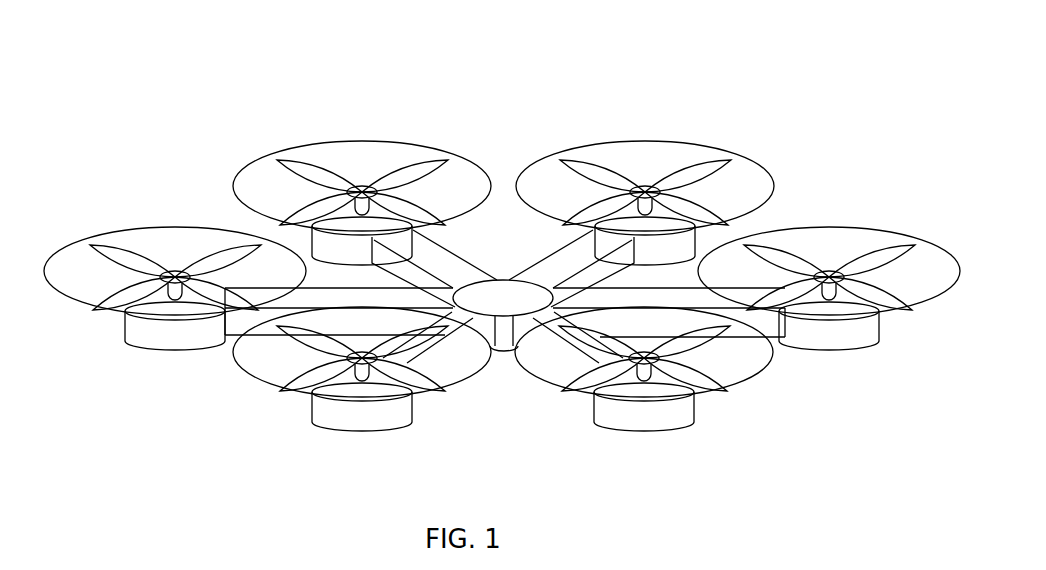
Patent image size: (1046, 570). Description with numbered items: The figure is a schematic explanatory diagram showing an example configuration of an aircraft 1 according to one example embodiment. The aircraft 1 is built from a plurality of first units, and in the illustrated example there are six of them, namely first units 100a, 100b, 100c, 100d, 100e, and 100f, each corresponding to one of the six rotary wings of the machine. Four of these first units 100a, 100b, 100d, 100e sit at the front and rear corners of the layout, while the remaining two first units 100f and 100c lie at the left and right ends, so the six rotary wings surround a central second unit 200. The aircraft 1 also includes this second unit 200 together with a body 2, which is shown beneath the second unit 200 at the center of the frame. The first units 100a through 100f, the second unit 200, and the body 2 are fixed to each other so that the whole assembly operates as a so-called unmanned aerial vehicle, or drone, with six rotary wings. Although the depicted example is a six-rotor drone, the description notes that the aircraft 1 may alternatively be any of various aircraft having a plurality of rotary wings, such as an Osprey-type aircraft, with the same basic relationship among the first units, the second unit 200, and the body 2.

The aircraft 1 is at (230, 48).
The body 2 is at (540, 350).
The second unit 200 is at (505, 296).
The first unit 100a is at (450, 90).
The first unit 100b is at (788, 90).
The first unit 100c is at (940, 176).
The first unit 100d is at (788, 500).
The first unit 100e is at (450, 500).
The first unit 100f is at (210, 176).